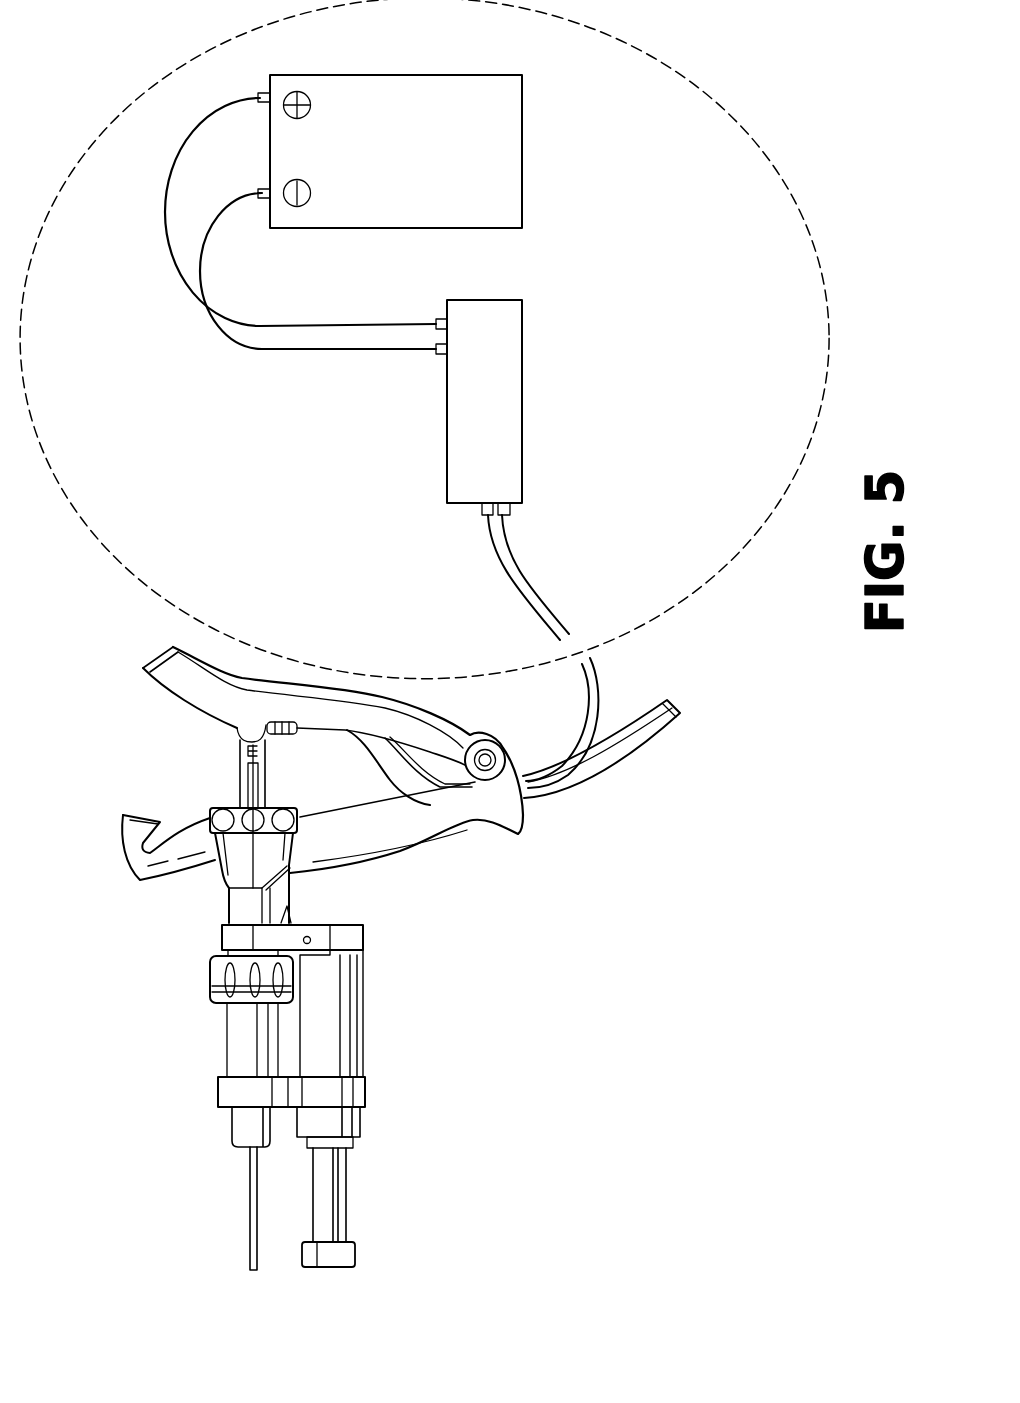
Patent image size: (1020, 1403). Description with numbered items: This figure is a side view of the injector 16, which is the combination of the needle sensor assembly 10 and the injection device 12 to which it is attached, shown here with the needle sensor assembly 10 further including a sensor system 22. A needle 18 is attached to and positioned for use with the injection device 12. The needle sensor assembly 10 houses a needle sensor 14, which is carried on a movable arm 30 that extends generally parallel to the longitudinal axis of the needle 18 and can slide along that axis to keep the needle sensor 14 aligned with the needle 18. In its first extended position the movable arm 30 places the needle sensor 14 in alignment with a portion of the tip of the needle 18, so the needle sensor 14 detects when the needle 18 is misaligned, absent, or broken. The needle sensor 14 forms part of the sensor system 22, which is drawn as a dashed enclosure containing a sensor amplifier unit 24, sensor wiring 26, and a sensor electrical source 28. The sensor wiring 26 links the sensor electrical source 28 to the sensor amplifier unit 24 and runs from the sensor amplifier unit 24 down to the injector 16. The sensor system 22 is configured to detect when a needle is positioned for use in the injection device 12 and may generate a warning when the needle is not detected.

The needle sensor assembly 10 is at (365, 1057).
The injection device 12 is at (225, 1032).
The needle sensor 14 is at (299, 1254).
The injector 16 is at (367, 843).
The needle 18 is at (250, 1254).
The sensor system 22 is at (104, 133).
The sensor amplifier unit 24 is at (486, 411).
The sensor wiring 26 is at (497, 569).
The sensor electrical source 28 is at (505, 148).
The movable arm 30 is at (328, 1187).